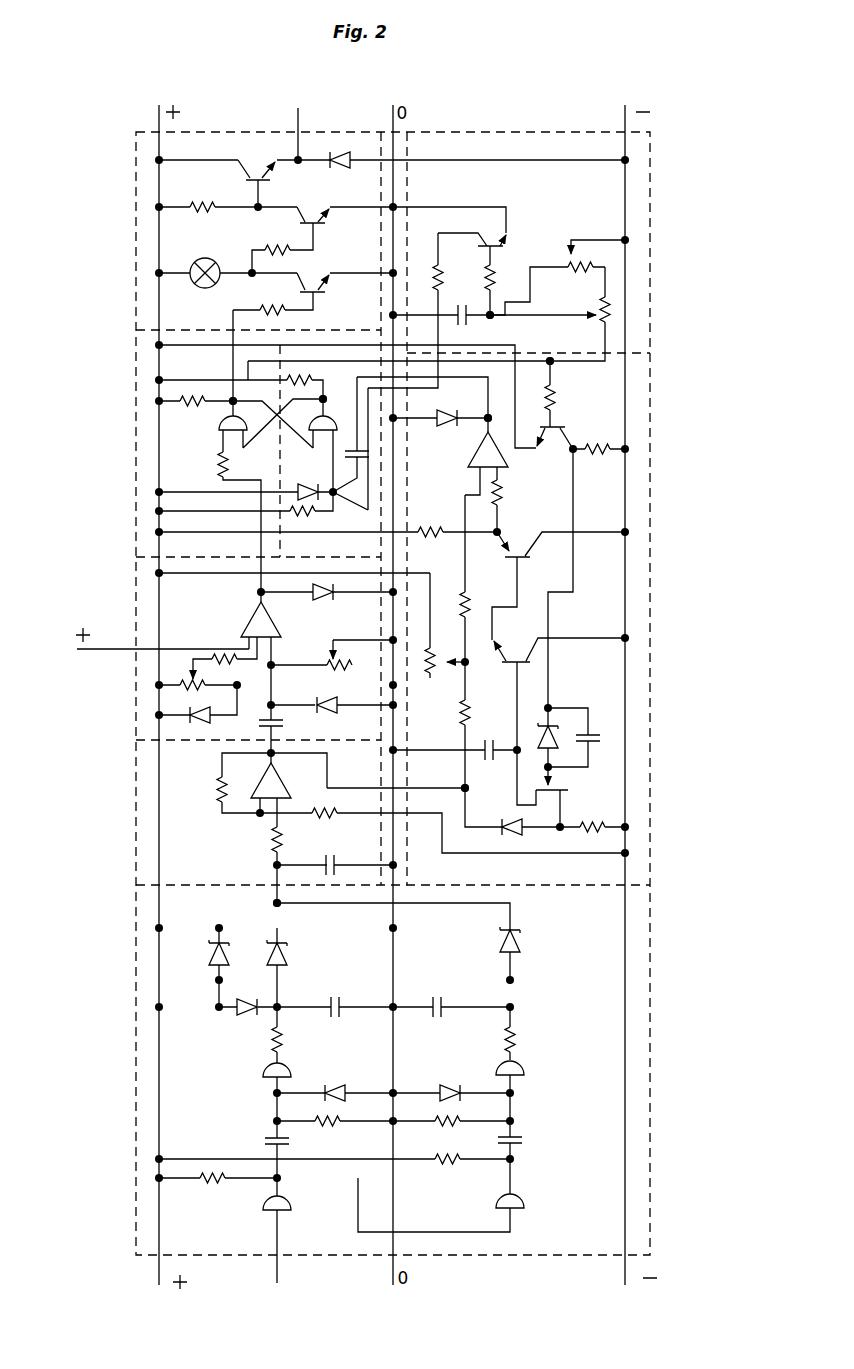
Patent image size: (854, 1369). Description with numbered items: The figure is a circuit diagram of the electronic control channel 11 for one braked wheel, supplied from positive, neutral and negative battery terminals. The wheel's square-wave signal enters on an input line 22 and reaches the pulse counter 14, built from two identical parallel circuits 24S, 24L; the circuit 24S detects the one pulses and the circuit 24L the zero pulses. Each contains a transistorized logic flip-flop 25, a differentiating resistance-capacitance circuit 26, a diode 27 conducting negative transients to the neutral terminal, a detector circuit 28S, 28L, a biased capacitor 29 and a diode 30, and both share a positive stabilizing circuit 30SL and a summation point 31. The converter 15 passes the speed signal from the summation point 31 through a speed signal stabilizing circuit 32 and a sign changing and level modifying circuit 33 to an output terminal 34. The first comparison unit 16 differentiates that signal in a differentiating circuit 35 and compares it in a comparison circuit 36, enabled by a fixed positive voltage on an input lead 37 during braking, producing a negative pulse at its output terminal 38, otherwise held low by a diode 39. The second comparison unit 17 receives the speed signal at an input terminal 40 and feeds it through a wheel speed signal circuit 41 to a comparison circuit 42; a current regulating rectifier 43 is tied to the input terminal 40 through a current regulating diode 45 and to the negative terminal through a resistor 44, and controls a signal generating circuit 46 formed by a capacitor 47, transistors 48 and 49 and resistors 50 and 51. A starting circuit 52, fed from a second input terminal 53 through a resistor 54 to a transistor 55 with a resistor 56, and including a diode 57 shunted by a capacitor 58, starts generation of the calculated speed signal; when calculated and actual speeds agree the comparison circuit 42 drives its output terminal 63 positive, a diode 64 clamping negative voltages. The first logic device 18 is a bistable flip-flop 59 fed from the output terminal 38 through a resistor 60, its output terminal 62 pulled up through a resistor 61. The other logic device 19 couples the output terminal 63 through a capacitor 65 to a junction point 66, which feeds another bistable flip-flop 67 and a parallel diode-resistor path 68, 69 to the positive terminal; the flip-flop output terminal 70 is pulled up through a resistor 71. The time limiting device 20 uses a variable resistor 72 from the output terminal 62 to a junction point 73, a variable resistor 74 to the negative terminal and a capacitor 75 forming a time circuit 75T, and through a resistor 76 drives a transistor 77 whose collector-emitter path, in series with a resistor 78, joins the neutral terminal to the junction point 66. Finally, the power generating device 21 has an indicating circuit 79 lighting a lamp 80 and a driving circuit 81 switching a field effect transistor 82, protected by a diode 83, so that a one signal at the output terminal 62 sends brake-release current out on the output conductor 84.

The control circuit 11 is at (656, 751).
The pulse counter 14 is at (131, 1079).
The converter 15 is at (131, 789).
The first comparison unit 16 is at (131, 699).
The second comparison unit 17 is at (656, 588).
The first logic device 18 is at (131, 491).
The other logic device 19 is at (277, 463).
The time limiting device 20 is at (654, 226).
The indicator stage 21 is at (131, 270).
The input line 22 is at (280, 1270).
The parallel circuit 24S is at (272, 1122).
The parallel circuit 24L is at (516, 1105).
The transistorized logic flip-flop 25 is at (264, 1208).
The differentiating resistance-capacitance circuit 26 is at (292, 1141).
The diode 27 is at (342, 1090).
The detector circuit 28S is at (270, 1040).
The detector circuit 28L is at (520, 1065).
The biased capacitor 29 is at (333, 1015).
The diode 30 is at (292, 950).
The positive stabilizing circuit 30SL is at (210, 952).
The summation point 31 is at (273, 904).
The speed signal stabilizing circuit 32 is at (282, 840).
The sign changing and level modifying circuit 33 is at (282, 770).
The output terminal 34 is at (268, 752).
The differentiating circuit 35 is at (278, 718).
The comparison circuit 36 is at (235, 655).
The input lead 37 is at (100, 651).
The output terminal 38 is at (258, 593).
The diode 39 is at (316, 596).
The input terminal 40 is at (463, 785).
The wheel speed signal circuit 41 is at (468, 705).
The comparison circuit 42 is at (470, 463).
The current regulating rectifier 43 is at (565, 790).
The resistor 44 is at (593, 826).
The current regulating diode 45 is at (505, 822).
The signal generating circuit 46 is at (524, 586).
The capacitor 47 is at (491, 745).
The transistor 48 is at (558, 694).
The transistor 49 is at (513, 560).
The resistor 50 is at (503, 495).
The resistor 51 is at (432, 530).
The starting circuit 52 is at (557, 620).
The second input terminal 53 is at (553, 365).
The resistor 54 is at (553, 398).
The transistor 55 is at (552, 432).
The resistor 56 is at (605, 455).
The diode 57 is at (543, 735).
The capacitor 58 is at (592, 735).
The bistable flip-flop 59 is at (222, 428).
The resistor 60 is at (221, 462).
The resistor 61 is at (195, 405).
The output terminal 62 is at (232, 398).
The output terminal 63 is at (484, 426).
The diode 64 is at (460, 412).
The capacitor 65 is at (350, 460).
The junction point 66 is at (337, 500).
The bistable flip-flop 67 is at (318, 428).
The resistor 68 is at (305, 488).
The resistor 69 is at (298, 515).
The output terminal 70 is at (327, 400).
The resistor 71 is at (313, 382).
The variable resistor 72 is at (603, 330).
The junction point 73 is at (492, 318).
The variable resistor 74 is at (591, 270).
The capacitor 75 is at (465, 305).
The time circuit 75T is at (542, 311).
The resistor 76 is at (492, 278).
The transistor 77 is at (505, 240).
The resistor 78 is at (438, 278).
The indicating circuit 79 is at (265, 310).
The lamp 80 is at (200, 288).
The driving circuit 81 is at (285, 247).
The field effect transistor 82 is at (258, 178).
The diode 83 is at (340, 168).
The output conductor 84 is at (300, 116).